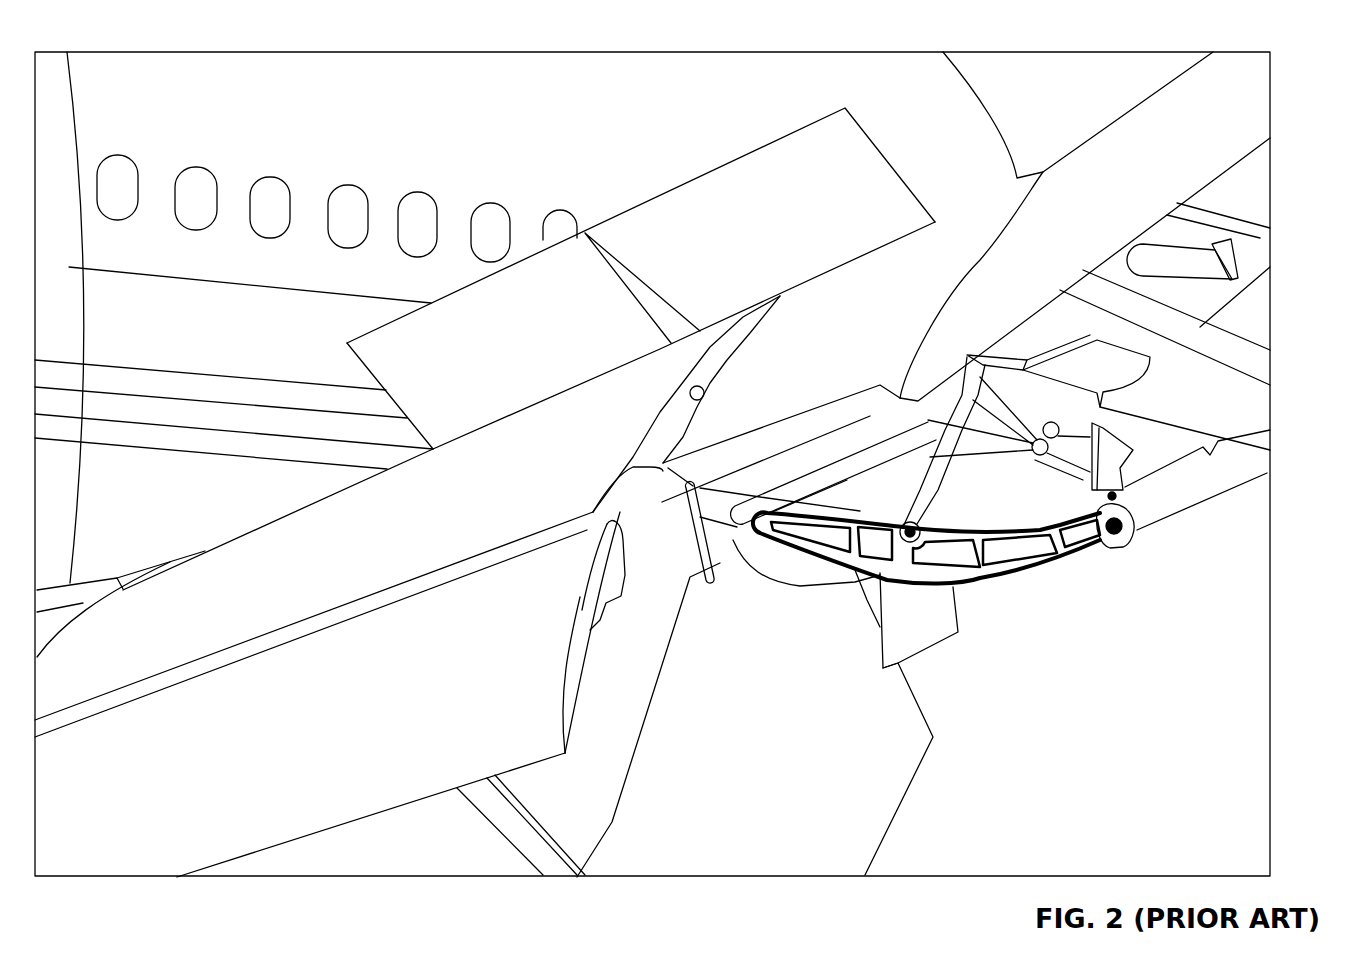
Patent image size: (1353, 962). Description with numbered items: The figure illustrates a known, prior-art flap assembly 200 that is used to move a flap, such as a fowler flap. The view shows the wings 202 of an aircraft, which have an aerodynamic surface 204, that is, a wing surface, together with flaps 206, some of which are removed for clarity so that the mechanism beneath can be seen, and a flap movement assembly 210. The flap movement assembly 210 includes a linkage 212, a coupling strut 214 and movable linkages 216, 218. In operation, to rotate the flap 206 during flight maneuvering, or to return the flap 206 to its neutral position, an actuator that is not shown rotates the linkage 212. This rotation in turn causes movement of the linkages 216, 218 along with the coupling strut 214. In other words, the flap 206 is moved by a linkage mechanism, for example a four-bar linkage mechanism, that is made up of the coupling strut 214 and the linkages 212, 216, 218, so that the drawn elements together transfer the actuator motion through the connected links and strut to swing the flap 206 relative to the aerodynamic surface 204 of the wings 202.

The flap assembly 200 is at (163, 51).
The wings 202 is at (192, 503).
The aerodynamic surface 204 is at (342, 513).
The flaps 206 is at (333, 820).
The flap movement assembly 210 is at (812, 667).
The linkage 212 is at (884, 598).
The coupling strut 214 is at (717, 582).
The movable linkage 216 is at (740, 557).
The movable linkage 218 is at (737, 488).